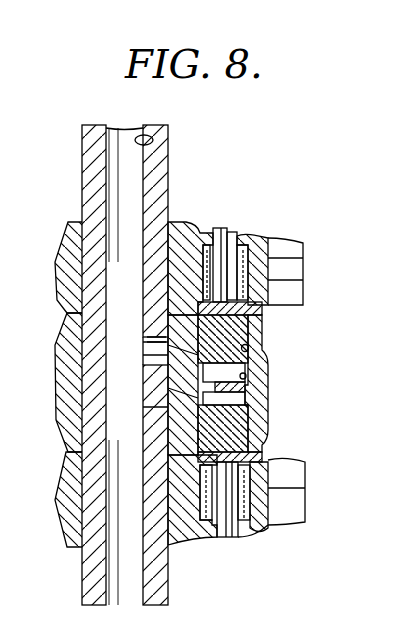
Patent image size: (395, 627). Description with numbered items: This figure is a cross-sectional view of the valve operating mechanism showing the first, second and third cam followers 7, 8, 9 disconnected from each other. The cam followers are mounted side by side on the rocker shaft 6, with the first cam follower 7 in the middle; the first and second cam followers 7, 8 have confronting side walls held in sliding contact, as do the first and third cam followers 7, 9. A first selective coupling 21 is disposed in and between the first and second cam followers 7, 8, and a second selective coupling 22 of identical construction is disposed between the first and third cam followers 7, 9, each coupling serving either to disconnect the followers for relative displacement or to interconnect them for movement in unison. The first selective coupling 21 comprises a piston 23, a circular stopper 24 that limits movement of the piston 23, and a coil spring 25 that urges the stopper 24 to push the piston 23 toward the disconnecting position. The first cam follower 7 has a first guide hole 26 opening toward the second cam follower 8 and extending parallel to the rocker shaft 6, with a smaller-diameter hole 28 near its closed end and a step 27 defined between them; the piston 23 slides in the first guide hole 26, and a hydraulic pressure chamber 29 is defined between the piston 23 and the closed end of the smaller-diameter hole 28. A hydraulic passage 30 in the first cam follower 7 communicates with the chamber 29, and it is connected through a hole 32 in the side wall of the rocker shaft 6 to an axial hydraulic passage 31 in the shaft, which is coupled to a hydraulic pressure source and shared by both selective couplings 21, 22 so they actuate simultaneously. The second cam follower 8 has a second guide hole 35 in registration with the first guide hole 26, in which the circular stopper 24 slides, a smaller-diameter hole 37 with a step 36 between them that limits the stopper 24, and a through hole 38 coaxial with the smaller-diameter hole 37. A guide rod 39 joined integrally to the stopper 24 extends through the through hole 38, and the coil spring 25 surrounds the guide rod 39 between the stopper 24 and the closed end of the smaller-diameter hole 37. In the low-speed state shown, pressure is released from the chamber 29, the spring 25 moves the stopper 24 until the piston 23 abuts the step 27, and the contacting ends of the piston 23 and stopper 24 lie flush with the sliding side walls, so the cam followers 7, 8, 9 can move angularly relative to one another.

The rocker shaft 6 is at (86, 578).
The first cam follower 7 is at (57, 373).
The second cam follower 8 is at (58, 250).
The third cam follower 9 is at (60, 480).
The first selective coupling 21 is at (245, 217).
The second selective coupling 22 is at (241, 545).
The piston 23 is at (250, 328).
The circular stopper 24 is at (270, 300).
The coil spring 25 is at (208, 250).
The first guide hole 26 is at (248, 351).
The step 27 is at (212, 368).
The smaller-diameter hole 28 is at (246, 376).
The hydraulic pressure chamber 29 is at (215, 394).
The hydraulic passage 30 is at (200, 352).
The hydraulic passage 31 is at (153, 140).
The hole 32 is at (160, 347).
The second guide hole 35 is at (248, 285).
The step 36 is at (208, 280).
The smaller-diameter hole 37 is at (247, 262).
The through hole 38 is at (238, 232).
The guide rod 39 is at (218, 228).